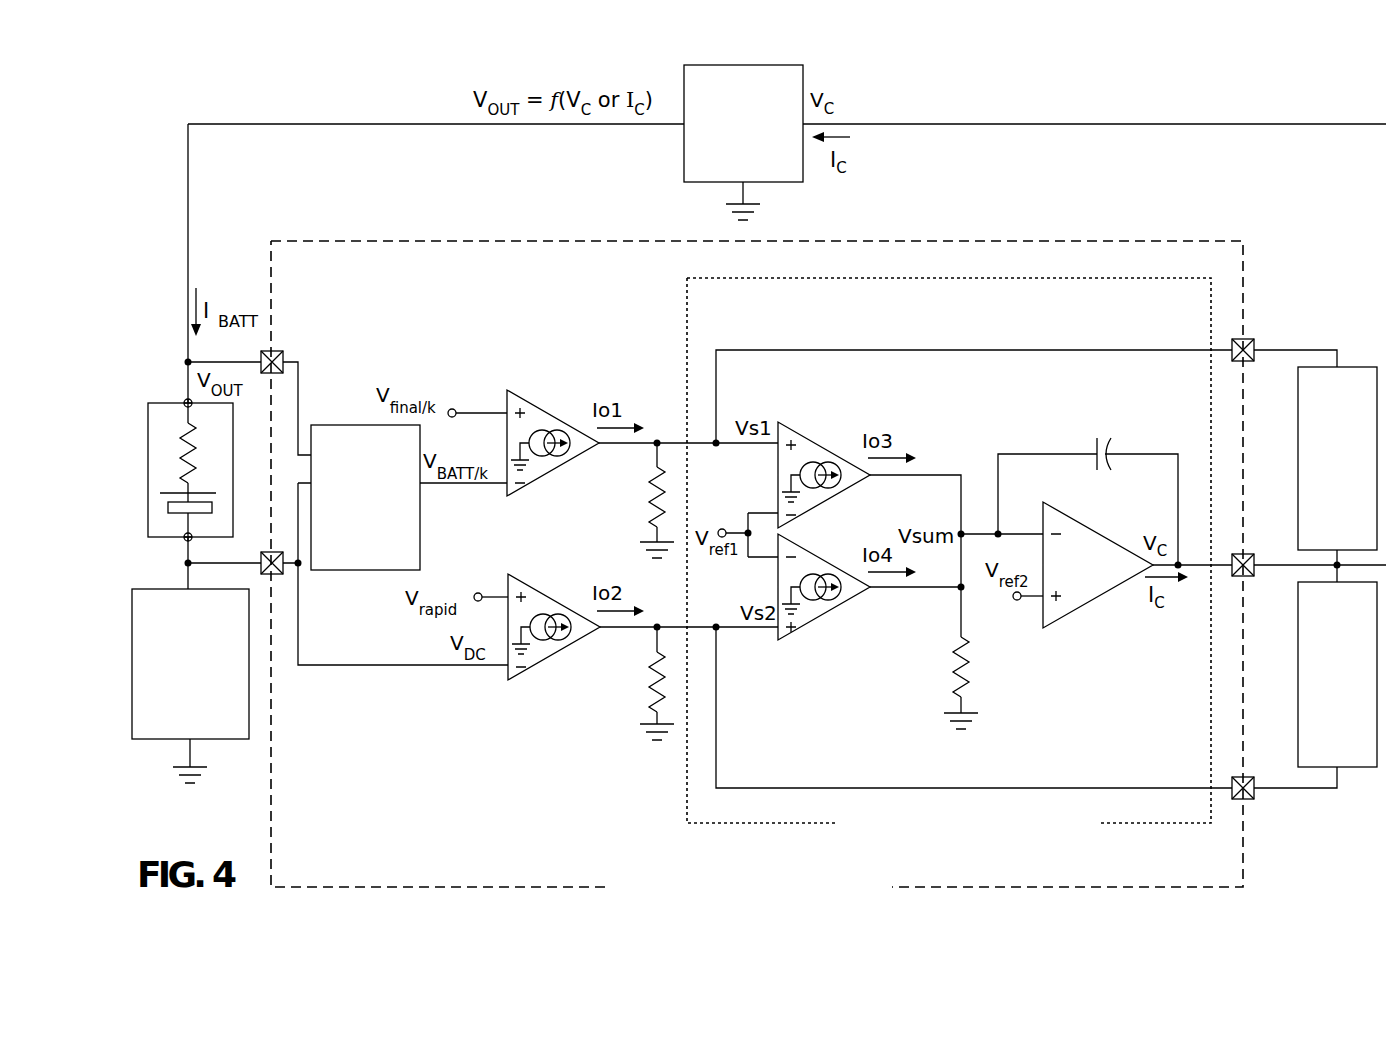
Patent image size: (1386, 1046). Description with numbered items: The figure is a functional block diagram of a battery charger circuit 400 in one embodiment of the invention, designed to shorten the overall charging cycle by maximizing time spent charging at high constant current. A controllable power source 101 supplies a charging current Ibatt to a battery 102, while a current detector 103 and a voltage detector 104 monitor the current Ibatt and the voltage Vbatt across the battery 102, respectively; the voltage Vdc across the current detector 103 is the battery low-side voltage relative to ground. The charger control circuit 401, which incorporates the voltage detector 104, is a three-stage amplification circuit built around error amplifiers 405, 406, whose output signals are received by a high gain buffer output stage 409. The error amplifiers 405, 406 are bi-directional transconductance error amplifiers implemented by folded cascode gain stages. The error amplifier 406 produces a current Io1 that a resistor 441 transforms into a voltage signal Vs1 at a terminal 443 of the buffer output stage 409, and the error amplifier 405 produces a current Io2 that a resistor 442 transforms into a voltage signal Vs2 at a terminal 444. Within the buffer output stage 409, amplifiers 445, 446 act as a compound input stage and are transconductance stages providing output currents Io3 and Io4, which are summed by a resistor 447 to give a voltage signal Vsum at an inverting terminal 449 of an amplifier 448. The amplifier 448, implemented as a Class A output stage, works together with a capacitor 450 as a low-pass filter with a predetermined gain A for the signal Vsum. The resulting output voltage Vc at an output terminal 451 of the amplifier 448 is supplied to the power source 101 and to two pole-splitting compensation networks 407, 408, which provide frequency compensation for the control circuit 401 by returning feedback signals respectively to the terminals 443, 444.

The battery charger circuit 400 is at (1038, 102).
The charger control circuit 401 is at (985, 240).
The buffer output stage 409 is at (935, 279).
The controllable power source 101 is at (790, 183).
The battery 102 is at (162, 402).
The current detector 103 is at (162, 589).
The voltage detector 104 is at (338, 424).
The error amplifier 405 is at (561, 650).
The error amplifier 406 is at (561, 466).
The resistor 441 is at (650, 507).
The resistor 442 is at (650, 690).
The terminal 443 is at (669, 440).
The terminal 444 is at (670, 622).
The amplifier 445 is at (822, 447).
The amplifier 446 is at (822, 615).
The resistor 447 is at (955, 683).
The amplifier 448 is at (1095, 530).
The inverting terminal 449 is at (1013, 530).
The capacitor 450 is at (1110, 446).
The output terminal 451 is at (1280, 560).
The pole-splitting compensation network 407 is at (1355, 366).
The pole-splitting compensation network 408 is at (1345, 768).